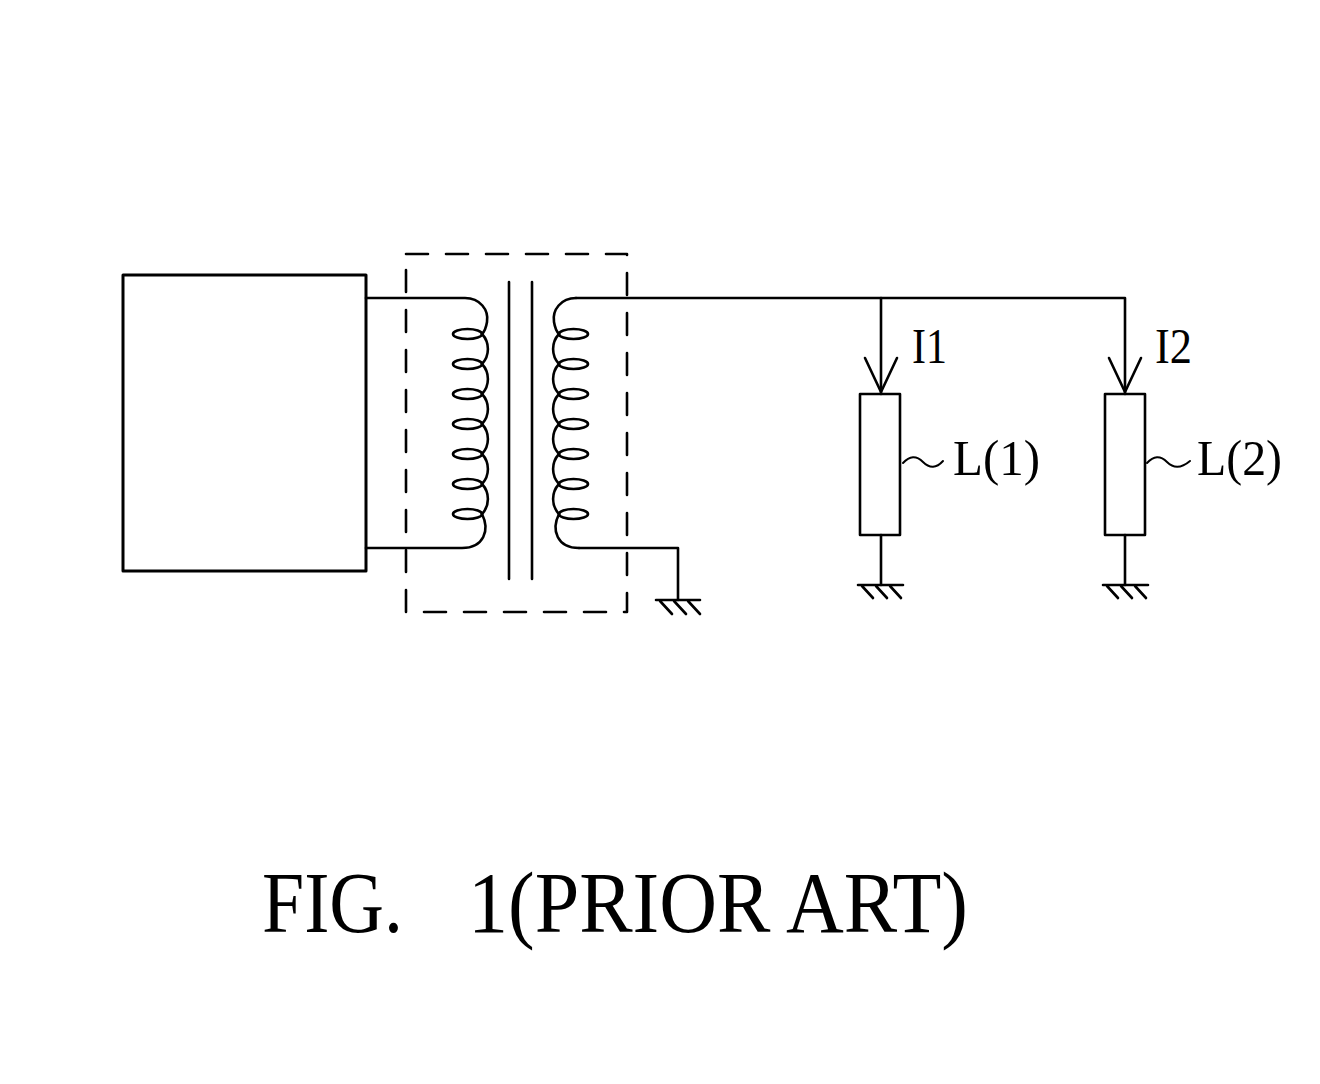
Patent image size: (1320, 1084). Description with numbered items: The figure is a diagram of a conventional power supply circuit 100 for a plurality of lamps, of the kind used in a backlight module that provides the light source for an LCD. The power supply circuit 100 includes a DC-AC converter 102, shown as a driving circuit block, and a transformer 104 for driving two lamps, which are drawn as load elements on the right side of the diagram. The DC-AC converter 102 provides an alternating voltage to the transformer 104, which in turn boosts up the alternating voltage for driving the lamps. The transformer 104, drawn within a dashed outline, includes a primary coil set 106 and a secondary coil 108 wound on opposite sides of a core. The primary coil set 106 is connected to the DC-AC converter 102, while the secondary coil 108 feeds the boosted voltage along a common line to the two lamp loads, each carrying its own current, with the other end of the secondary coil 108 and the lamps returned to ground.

The power supply circuit 100 is at (1285, 157).
The DC-AC converter 102 is at (242, 275).
The transformer 104 is at (537, 254).
The primary coil set 106 is at (456, 514).
The secondary coil 108 is at (588, 514).